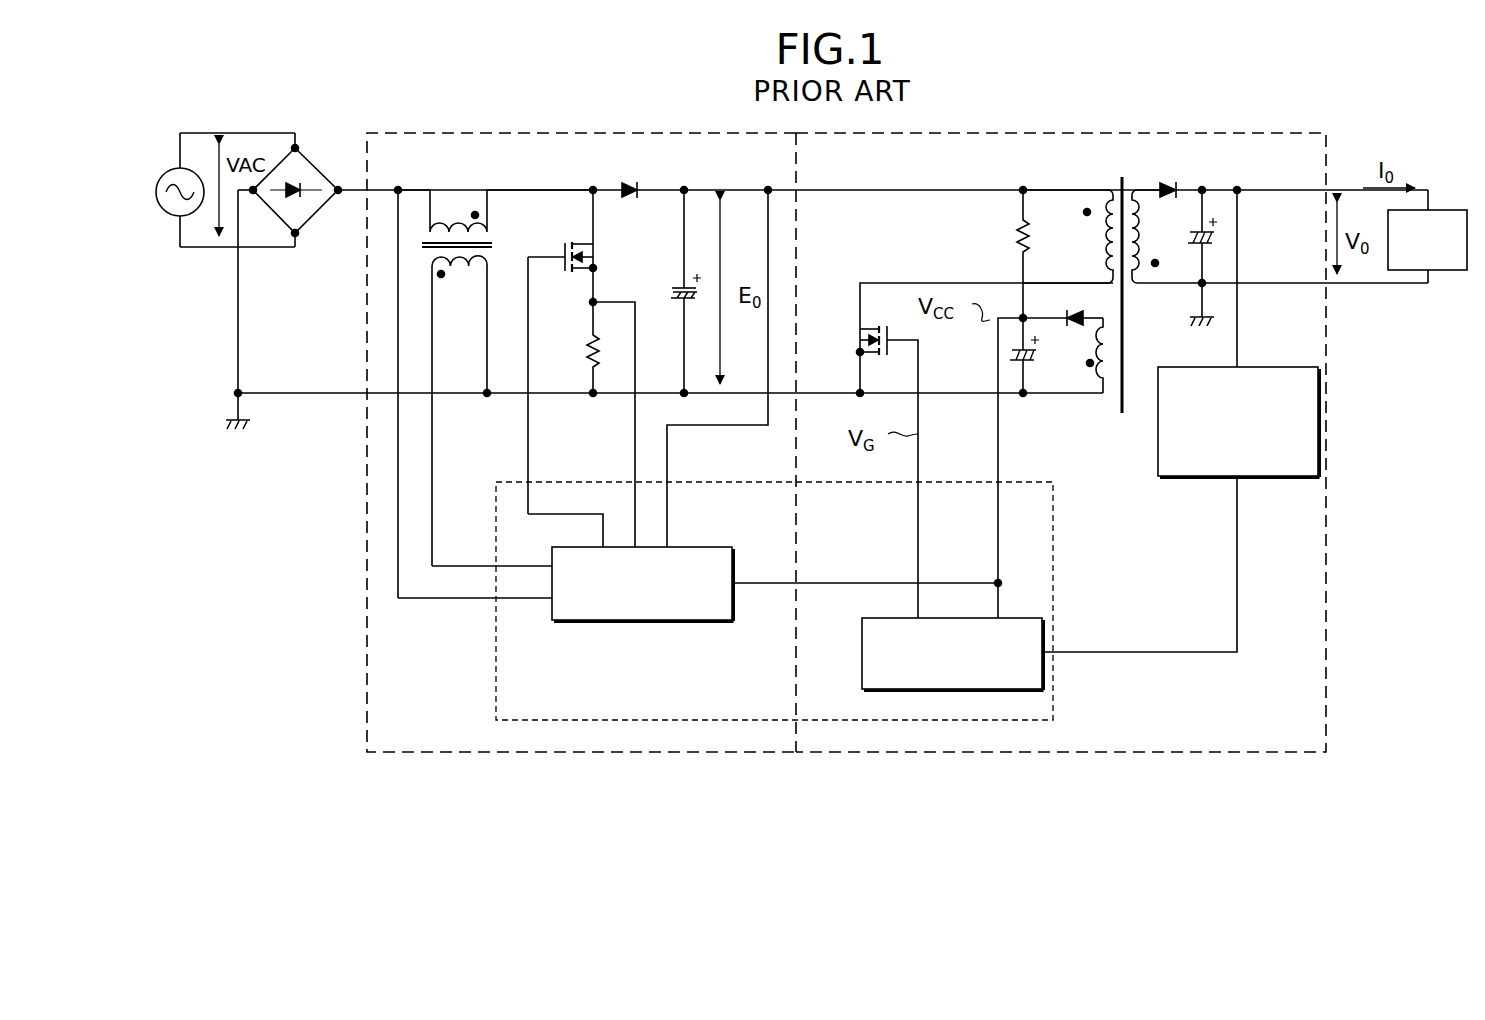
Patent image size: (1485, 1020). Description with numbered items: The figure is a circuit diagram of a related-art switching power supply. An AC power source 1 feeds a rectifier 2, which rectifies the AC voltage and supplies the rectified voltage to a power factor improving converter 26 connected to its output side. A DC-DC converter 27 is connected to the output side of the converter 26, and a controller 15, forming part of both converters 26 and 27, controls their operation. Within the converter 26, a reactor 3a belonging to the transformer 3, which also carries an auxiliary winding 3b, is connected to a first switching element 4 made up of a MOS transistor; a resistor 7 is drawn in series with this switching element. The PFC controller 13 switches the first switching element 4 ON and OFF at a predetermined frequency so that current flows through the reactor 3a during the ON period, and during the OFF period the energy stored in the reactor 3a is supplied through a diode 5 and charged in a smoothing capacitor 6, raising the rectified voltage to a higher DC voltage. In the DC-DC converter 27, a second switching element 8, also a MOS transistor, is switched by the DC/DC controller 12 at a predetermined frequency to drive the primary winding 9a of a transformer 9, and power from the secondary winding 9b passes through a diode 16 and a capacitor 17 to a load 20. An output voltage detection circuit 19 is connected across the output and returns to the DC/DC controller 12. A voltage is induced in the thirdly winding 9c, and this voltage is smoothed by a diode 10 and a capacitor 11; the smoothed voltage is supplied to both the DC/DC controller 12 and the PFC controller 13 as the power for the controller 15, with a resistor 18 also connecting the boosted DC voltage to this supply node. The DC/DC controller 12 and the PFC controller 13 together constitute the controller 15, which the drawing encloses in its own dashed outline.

The AC power source 1 is at (170, 214).
The rectifier 2 is at (274, 213).
The transformer (reactor) 3 is at (492, 244).
The reactor 3a is at (466, 218).
The auxiliary winding 3b is at (462, 270).
The first switching element 4 is at (598, 248).
The diode 5 is at (622, 184).
The smoothing capacitor 6 is at (670, 296).
The resistor 7 is at (586, 352).
The second switching element 8 is at (856, 332).
The transformer 9 is at (1122, 414).
The primary winding 9a is at (1104, 208).
The secondary winding 9b is at (1140, 282).
The thirdly winding 9c is at (1102, 380).
The diode 10 is at (1080, 310).
The capacitor 11 is at (1036, 356).
The DC/DC controller 12 is at (862, 654).
The PFC controller 13 is at (645, 623).
The controller 15 is at (1054, 590).
The diode 16 is at (1178, 188).
The capacitor 17 is at (1216, 240).
The resistor 18 is at (1015, 238).
The output voltage detection circuit 19 is at (1243, 479).
The load 20 is at (1428, 210).
The power factor improving converter 26 is at (367, 500).
The DC-DC converter 27 is at (1326, 530).